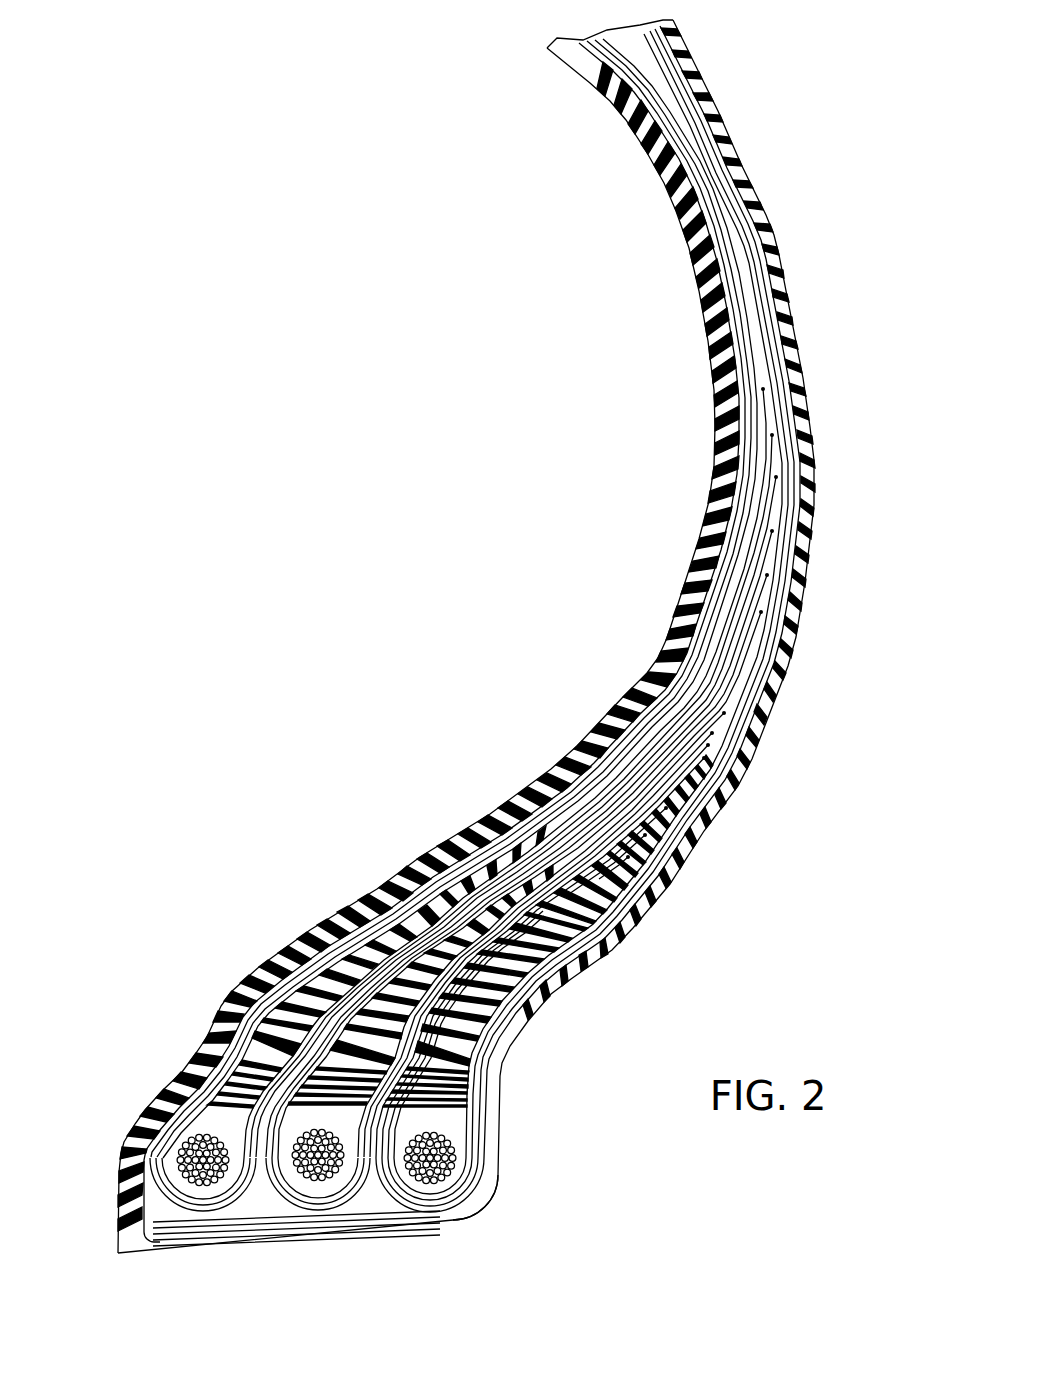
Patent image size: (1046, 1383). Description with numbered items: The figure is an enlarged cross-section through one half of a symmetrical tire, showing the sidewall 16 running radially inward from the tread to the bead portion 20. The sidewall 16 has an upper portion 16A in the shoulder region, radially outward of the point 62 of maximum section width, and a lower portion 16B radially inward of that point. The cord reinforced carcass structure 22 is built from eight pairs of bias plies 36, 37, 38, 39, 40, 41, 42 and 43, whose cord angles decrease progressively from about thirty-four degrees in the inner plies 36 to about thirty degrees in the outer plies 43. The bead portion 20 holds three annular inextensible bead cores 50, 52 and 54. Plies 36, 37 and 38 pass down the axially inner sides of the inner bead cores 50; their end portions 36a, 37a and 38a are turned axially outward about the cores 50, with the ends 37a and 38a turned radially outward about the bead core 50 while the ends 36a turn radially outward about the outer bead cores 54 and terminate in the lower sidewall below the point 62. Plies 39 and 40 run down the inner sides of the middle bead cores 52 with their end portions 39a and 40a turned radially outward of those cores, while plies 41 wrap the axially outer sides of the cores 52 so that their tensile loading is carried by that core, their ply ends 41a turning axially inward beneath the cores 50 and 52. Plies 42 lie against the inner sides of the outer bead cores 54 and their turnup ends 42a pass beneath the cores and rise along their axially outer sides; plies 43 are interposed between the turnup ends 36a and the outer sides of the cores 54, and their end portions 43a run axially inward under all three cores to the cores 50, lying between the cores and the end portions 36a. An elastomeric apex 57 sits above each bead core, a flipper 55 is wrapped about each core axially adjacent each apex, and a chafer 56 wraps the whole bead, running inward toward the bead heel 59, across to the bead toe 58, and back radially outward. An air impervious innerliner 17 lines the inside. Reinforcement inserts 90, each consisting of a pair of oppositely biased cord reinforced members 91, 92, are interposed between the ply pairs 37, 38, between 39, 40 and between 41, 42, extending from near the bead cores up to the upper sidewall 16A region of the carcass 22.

The sidewall 16 is at (812, 463).
The upper portion of sidewall 16A is at (668, 22).
The lower portion of sidewall 16B is at (592, 973).
The innerliner 17 is at (708, 368).
The bead portion 20 is at (512, 1163).
The cord reinforced carcass structure 22 is at (600, 97).
The carcass plies 36 is at (600, 48).
The carcass plies 37 is at (578, 62).
The carcass plies 38 is at (650, 120).
The carcass plies 39 is at (712, 215).
The carcass plies 40 is at (640, 80).
The carcass plies 41 is at (665, 103).
The carcass plies 42 is at (745, 195).
The carcass plies 43 is at (775, 265).
The end portions of plies 36 36a is at (710, 815).
The end portions of plies 37 37a is at (700, 650).
The end portions of plies 38 38a is at (575, 805).
The end portions of plies 39 39a is at (770, 423).
The end portions of plies 40 40a is at (765, 540).
The ply ends of plies 41 41a is at (172, 1232).
The end portions of plies 42 42a is at (795, 620).
The end portions of plies 43 43a is at (165, 1240).
The bead core 50 is at (208, 1162).
The bead core 52 is at (320, 1158).
The bead core 54 is at (432, 1162).
The flipper 55 is at (435, 888).
The chafer 56 is at (380, 1240).
The apex 57 is at (372, 1030).
The bead toe 58 is at (116, 1254).
The bead heel 59 is at (482, 1212).
The point of maximum section width 62 is at (815, 513).
The reinforcement insert 90 is at (290, 955).
The cord reinforced member 91 is at (400, 940).
The cord reinforced member 92 is at (405, 925).